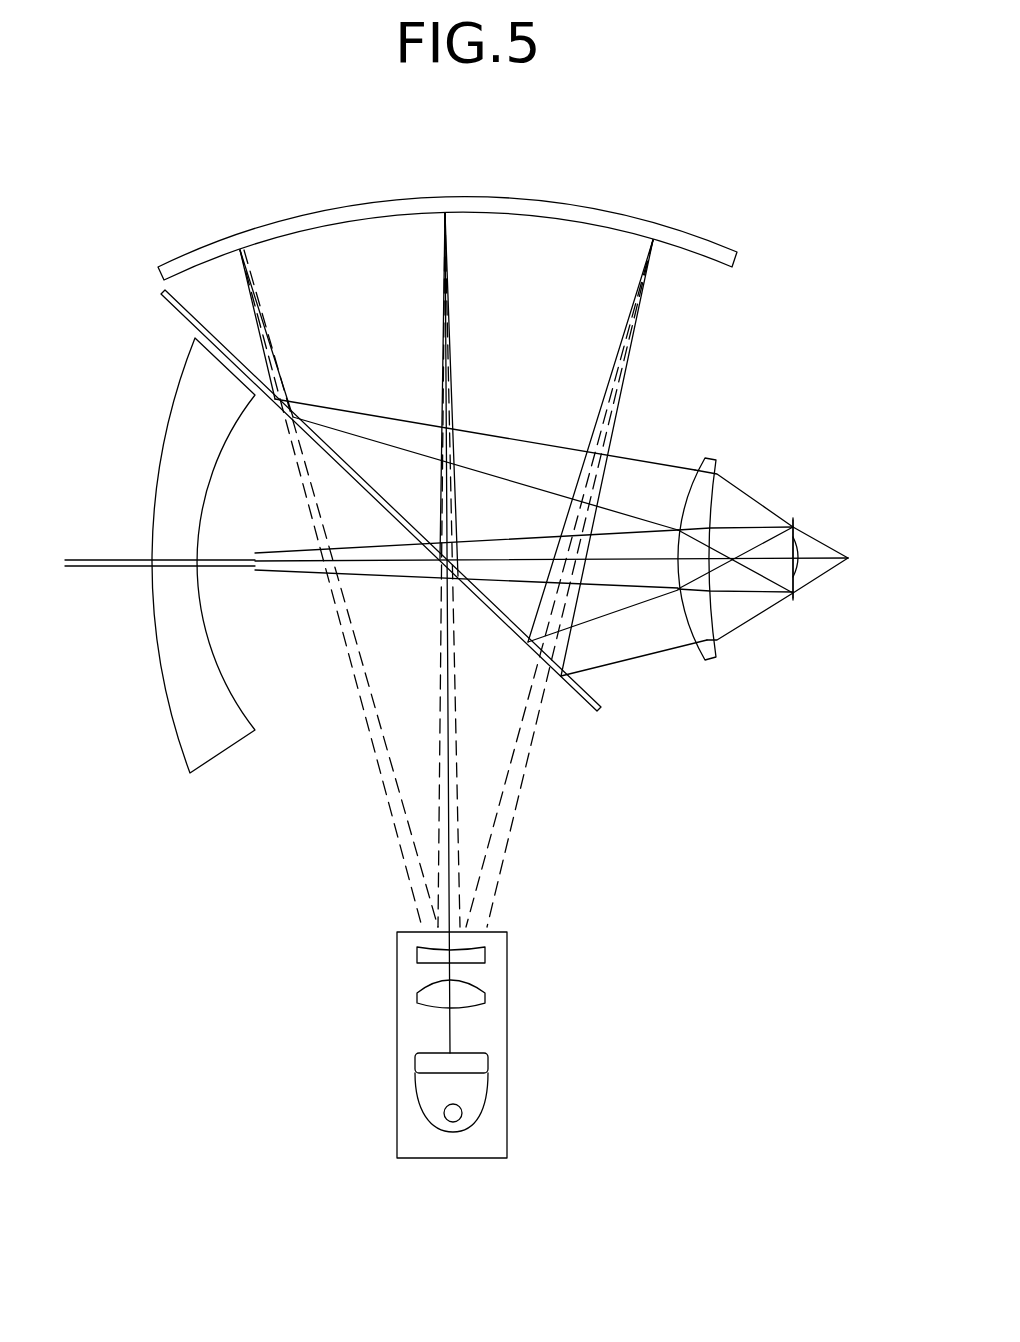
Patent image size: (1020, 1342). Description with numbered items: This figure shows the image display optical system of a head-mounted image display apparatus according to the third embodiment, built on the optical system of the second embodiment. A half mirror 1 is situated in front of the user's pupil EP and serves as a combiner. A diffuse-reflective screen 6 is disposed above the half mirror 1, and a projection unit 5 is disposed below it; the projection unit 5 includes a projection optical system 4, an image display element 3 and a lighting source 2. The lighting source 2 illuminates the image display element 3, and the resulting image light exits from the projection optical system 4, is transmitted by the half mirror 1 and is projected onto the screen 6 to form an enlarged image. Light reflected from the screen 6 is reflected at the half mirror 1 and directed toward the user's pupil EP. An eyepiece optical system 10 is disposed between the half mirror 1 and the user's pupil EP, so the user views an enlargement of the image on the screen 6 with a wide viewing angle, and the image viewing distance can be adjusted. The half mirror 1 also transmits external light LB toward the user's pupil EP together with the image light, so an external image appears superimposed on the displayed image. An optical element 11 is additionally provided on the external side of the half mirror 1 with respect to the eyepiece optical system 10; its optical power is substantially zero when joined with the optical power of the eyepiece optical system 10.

The half mirror 1 is at (600, 713).
The lighting source 2 is at (488, 1087).
The image display element 3 is at (488, 1060).
The projection optical system 4 is at (487, 943).
The projection unit 5 is at (595, 963).
The diffuse-reflective screen 6 is at (722, 243).
The eyepiece optical system 10 is at (712, 662).
The optical element 11 is at (190, 775).
The external light LB is at (92, 542).
The user's pupil EP is at (823, 573).